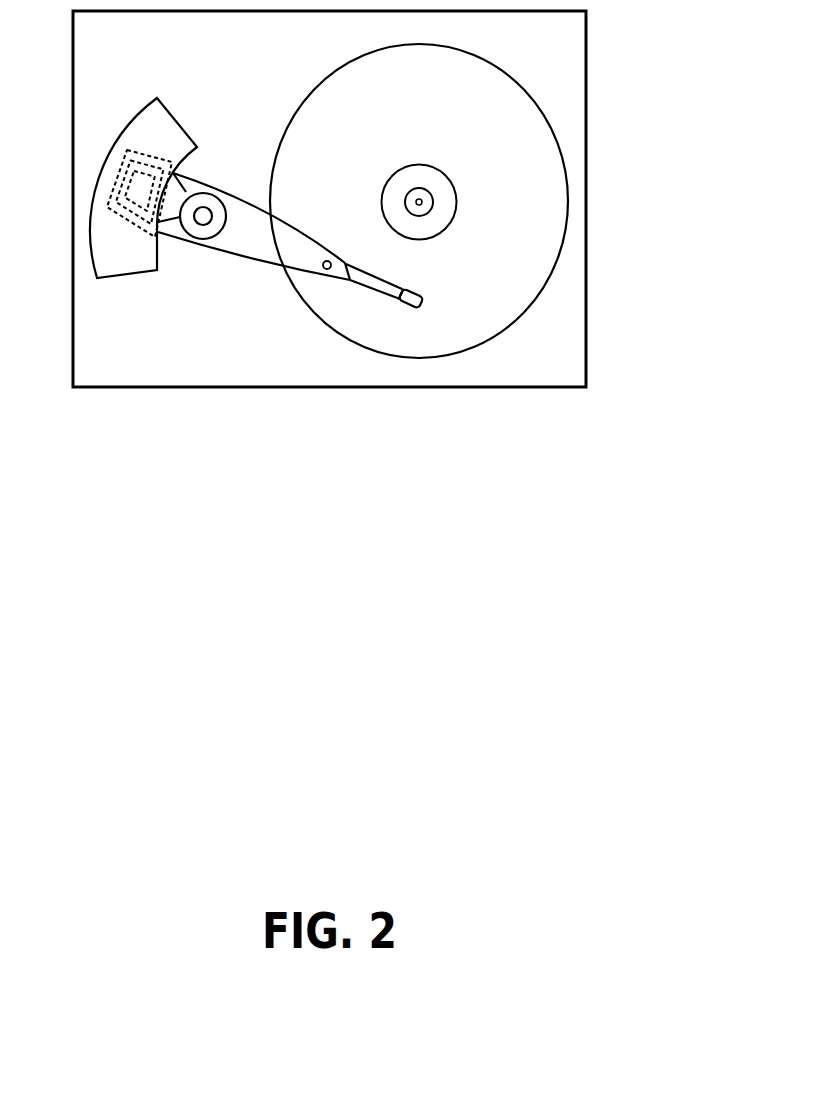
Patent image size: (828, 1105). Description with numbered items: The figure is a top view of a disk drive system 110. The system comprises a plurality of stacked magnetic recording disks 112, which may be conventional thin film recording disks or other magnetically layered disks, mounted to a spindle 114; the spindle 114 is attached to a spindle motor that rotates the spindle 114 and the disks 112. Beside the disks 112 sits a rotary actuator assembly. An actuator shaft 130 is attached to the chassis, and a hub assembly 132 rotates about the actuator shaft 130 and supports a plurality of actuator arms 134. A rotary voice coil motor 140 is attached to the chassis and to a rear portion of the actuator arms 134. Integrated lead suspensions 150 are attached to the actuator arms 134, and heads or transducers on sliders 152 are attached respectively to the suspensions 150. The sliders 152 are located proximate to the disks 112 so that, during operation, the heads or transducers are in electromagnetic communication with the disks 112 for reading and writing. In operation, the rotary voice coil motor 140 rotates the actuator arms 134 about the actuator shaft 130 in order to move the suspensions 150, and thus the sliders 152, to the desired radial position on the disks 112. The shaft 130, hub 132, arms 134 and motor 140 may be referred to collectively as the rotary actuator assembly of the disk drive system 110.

The disk drive system 110 is at (616, 106).
The magnetic recording disks 112 is at (447, 113).
The spindle 114 is at (419, 188).
The actuator shaft 130 is at (254, 220).
The hub assembly 132 is at (222, 193).
The actuator arms 134 is at (283, 235).
The rotary voice coil motor 140 is at (158, 128).
The integrated lead suspensions 150 is at (358, 280).
The sliders 152 is at (418, 299).